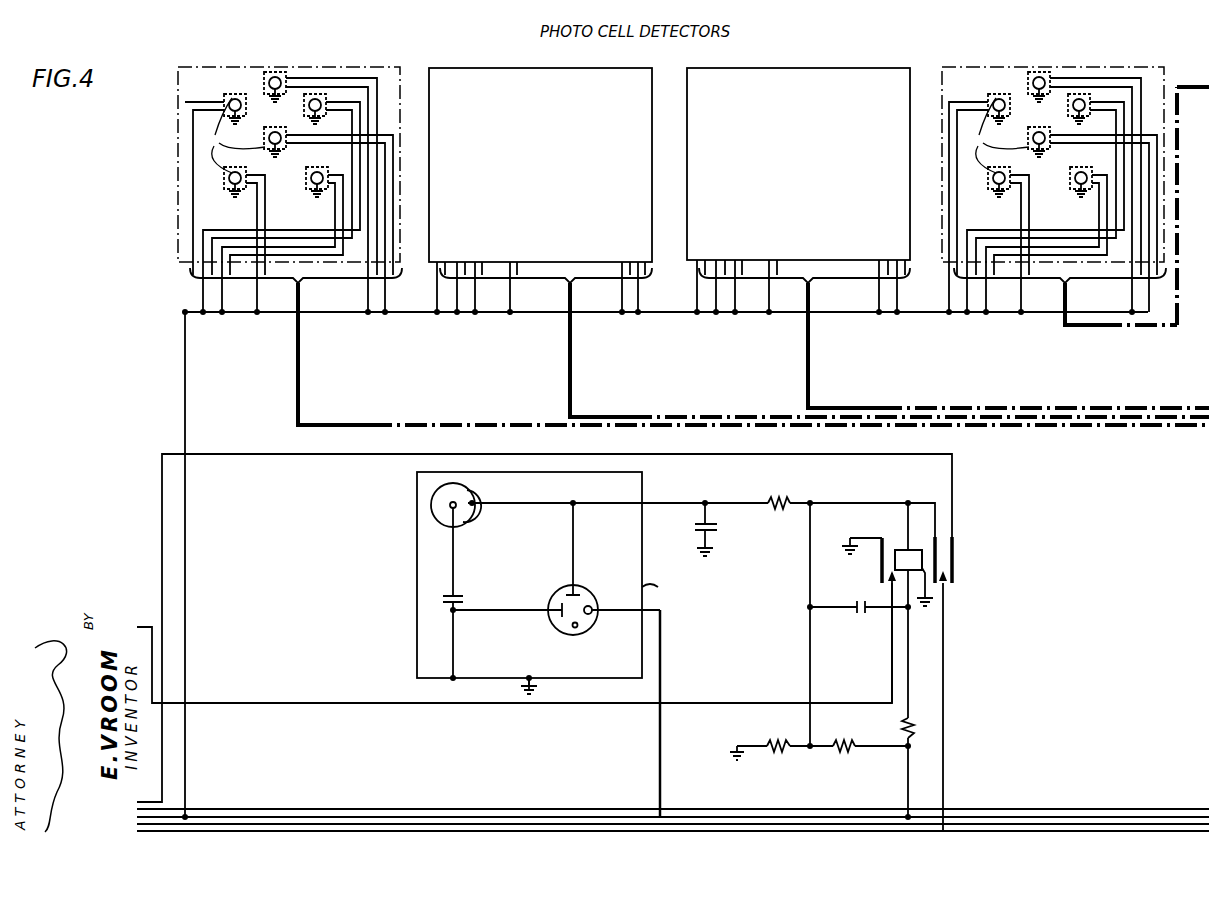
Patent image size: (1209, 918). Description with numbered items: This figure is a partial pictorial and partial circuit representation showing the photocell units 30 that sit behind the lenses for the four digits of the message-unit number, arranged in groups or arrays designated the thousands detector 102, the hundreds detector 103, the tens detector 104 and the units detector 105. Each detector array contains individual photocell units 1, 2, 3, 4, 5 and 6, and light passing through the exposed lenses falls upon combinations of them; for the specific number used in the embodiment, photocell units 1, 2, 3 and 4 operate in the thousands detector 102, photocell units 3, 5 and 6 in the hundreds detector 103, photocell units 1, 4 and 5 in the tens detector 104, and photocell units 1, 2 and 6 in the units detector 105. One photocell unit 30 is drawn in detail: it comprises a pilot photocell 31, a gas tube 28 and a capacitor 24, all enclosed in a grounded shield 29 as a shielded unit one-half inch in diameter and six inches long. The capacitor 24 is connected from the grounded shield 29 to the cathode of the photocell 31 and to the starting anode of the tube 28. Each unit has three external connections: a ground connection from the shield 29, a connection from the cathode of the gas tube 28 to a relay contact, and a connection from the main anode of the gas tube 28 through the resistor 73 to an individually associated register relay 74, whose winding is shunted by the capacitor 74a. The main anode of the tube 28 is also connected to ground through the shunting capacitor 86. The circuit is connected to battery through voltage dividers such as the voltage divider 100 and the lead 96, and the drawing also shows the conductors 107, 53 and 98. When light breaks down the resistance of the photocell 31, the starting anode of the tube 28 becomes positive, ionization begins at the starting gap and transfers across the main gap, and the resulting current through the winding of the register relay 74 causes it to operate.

The thousands detector 102 is at (197, 68).
The hundreds detector 103 is at (450, 66).
The tens detector 104 is at (703, 66).
The units detector 105 is at (960, 67).
The photocell unit 1 is at (235, 103).
The photocell unit 2 is at (308, 109).
The photocell unit 3 is at (317, 176).
The photocell unit 4 is at (235, 176).
The photocell unit 5 is at (268, 87).
The photocell unit 6 is at (268, 142).
The photocell unit 30 is at (417, 587).
The pilot photocell 31 is at (433, 510).
The shield 29 is at (642, 562).
The capacitor 24 is at (457, 604).
The gas tube 28 is at (552, 628).
The shunting capacitor 86 is at (713, 527).
The resistor 73 is at (779, 497).
The register relay 74 is at (903, 550).
The capacitor 74a is at (856, 614).
The voltage divider 100 is at (822, 750).
The conductor 107 is at (702, 454).
The lead 96 is at (349, 824).
The conductor 53 is at (413, 831).
The conductor 98 is at (481, 809).